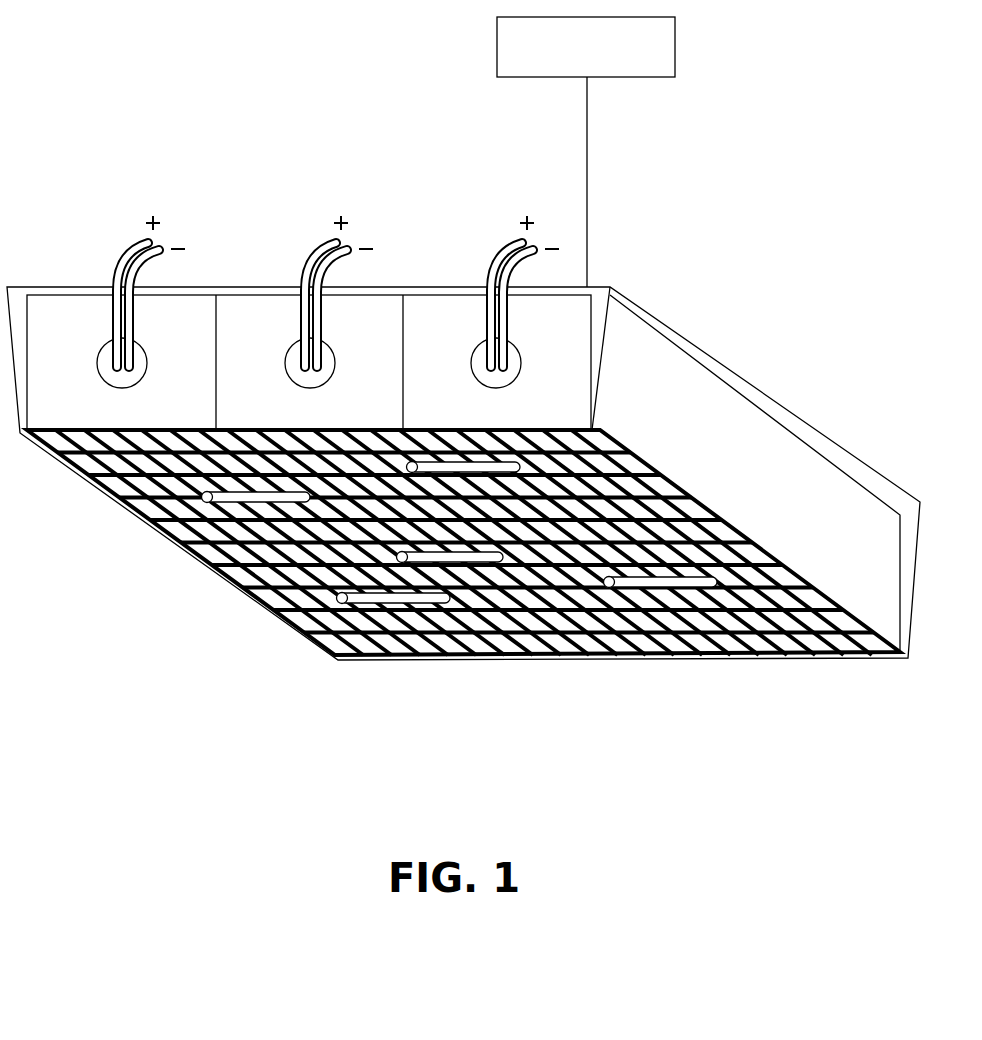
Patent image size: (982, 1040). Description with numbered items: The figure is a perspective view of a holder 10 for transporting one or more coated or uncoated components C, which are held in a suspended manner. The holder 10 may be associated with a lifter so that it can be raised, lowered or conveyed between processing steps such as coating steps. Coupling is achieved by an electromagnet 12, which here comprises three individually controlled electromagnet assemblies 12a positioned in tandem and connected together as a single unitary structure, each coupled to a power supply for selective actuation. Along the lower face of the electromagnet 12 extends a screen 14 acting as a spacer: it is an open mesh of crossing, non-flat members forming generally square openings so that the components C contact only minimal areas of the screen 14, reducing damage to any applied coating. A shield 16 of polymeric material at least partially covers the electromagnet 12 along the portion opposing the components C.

The holder 10 is at (463, 404).
The electromagnet 12 is at (309, 267).
The electromagnet assembly 12a is at (457, 313).
The screen 14 is at (463, 611).
The shield 16 is at (778, 395).
The component C is at (383, 598).